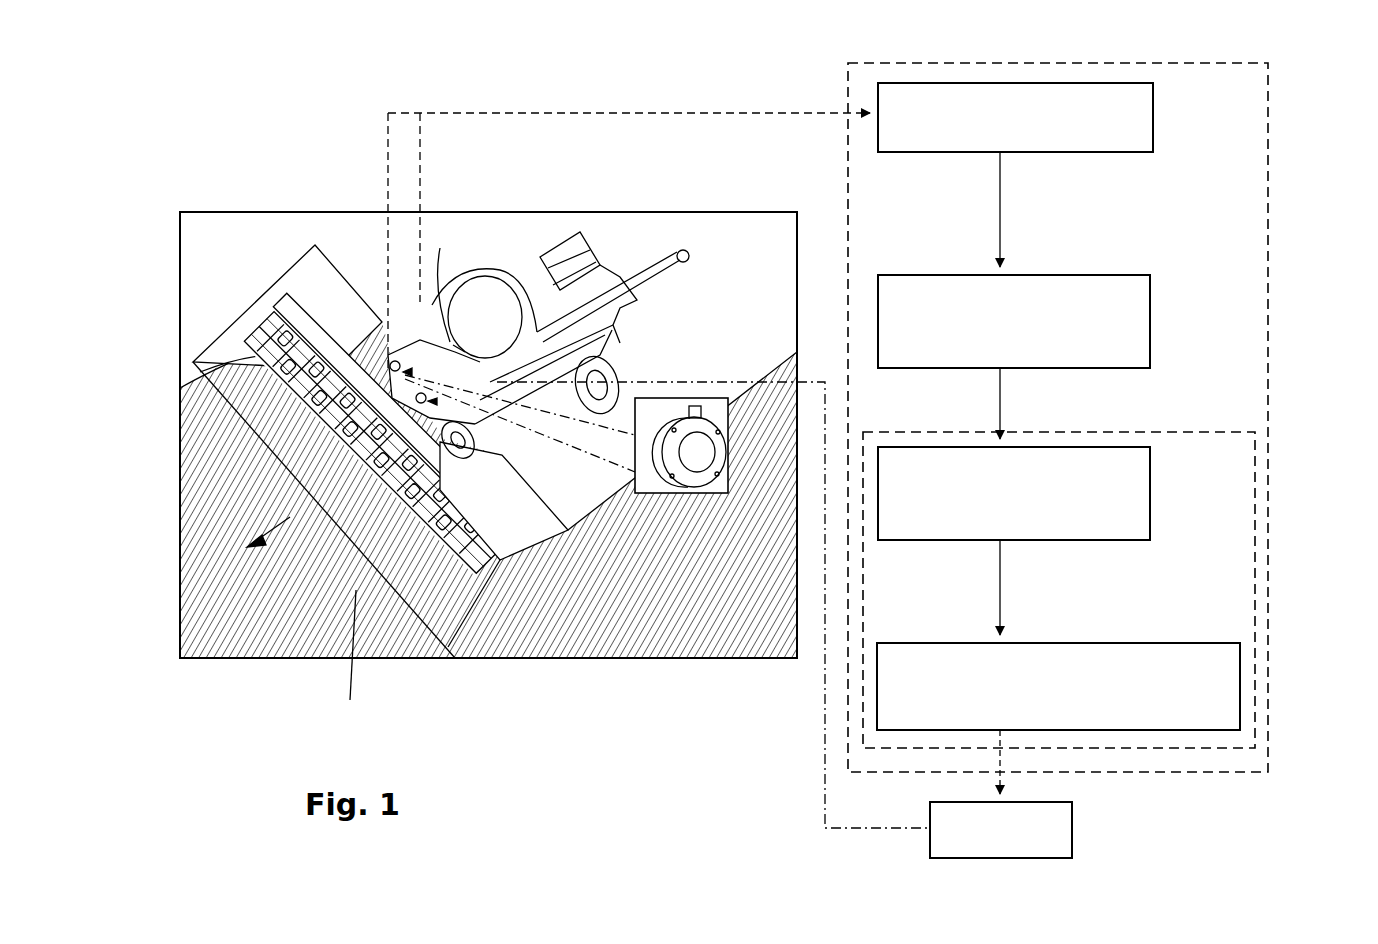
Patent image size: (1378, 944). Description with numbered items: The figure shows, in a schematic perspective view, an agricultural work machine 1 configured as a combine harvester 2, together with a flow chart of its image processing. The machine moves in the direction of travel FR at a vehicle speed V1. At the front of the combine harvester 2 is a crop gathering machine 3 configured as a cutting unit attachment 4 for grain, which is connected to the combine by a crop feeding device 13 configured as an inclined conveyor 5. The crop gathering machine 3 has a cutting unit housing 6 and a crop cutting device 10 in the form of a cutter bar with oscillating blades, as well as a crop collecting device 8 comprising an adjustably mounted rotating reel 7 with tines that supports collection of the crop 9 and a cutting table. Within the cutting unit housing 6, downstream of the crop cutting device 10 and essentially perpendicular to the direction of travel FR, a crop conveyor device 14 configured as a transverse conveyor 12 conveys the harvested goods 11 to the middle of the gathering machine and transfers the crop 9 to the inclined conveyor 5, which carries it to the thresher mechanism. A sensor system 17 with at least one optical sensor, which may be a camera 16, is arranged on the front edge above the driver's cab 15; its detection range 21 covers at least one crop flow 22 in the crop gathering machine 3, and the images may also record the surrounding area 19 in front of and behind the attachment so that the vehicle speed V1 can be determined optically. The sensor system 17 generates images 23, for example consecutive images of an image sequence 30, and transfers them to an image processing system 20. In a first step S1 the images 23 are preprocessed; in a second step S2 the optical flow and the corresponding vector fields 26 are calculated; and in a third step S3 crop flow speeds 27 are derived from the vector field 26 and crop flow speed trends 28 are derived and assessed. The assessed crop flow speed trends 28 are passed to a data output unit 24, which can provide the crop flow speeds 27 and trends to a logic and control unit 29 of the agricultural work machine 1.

The agricultural work machine 1 is at (538, 253).
The combine harvester 2 is at (532, 288).
The crop gathering machine 3 is at (383, 332).
The cutting unit attachment 4 is at (383, 332).
The inclined conveyor 5 is at (383, 332).
The crop feeding device 13 is at (383, 332).
The crop 9 is at (302, 312).
The crop cutting device 10 is at (195, 360).
The harvested goods 11 is at (221, 615).
The crop flow 22 is at (580, 475).
The crop flow speed 27 is at (320, 447).
The surrounding area 19 is at (351, 658).
The reel 7 is at (526, 604).
The crop collecting device 8 is at (526, 604).
The transverse conveyor 12 is at (526, 604).
The crop conveyor device 14 is at (526, 604).
The detection range 21 is at (526, 604).
The cutting unit housing 6 is at (505, 546).
The driver's cab 15 is at (455, 345).
The camera 16 is at (569, 474).
The sensor system 17 is at (421, 394).
The logic and control unit 29 is at (515, 382).
The images 23 is at (713, 226).
The image sequence 30 is at (640, 105).
The crop flow speed trend 28 is at (815, 801).
The image processing system 20 is at (848, 63).
The first step of the image processing system S1 is at (1153, 113).
The corresponding vector field 26 is at (1034, 402).
The second step of the image processing system S2 is at (1150, 312).
The third step of the image processing system S3 is at (1268, 583).
The data output unit 24 is at (1072, 830).
The direction of travel FR is at (286, 551).
The vehicle speed V1 is at (325, 584).